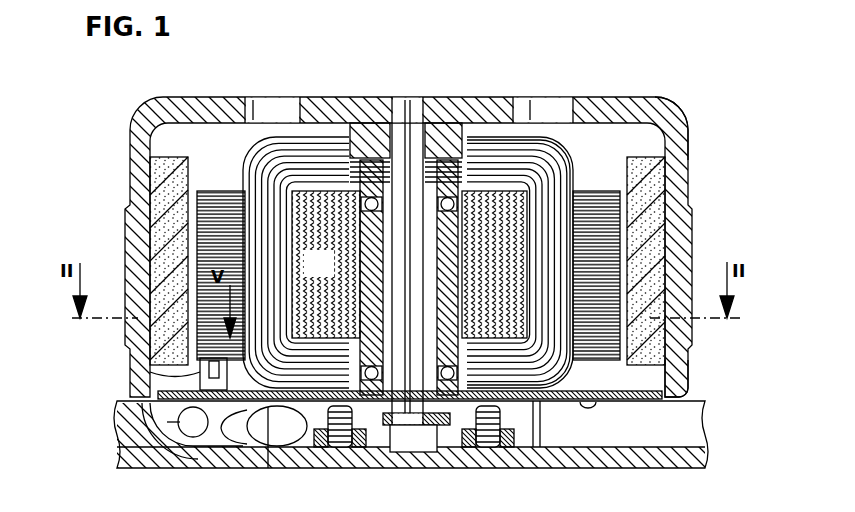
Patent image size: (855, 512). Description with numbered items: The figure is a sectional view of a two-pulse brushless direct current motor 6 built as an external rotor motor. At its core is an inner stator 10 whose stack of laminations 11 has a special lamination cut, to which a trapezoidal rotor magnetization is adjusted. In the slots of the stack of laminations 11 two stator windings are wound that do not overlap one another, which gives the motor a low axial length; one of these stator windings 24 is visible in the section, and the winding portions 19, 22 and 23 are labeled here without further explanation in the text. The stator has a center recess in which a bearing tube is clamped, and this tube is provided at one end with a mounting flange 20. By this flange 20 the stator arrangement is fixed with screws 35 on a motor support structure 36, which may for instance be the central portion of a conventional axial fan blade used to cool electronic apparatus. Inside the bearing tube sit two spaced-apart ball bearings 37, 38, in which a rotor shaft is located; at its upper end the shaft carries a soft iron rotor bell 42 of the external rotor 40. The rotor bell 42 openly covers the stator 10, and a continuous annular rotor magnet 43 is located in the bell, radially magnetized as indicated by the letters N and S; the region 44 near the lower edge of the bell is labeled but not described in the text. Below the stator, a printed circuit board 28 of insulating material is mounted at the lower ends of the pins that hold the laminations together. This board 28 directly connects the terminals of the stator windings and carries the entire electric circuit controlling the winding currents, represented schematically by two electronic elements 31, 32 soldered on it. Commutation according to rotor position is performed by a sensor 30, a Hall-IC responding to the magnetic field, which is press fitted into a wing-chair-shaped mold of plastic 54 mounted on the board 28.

The two-pulse brushless direct current motor 6 is at (247, 97).
The inner stator 10 is at (580, 184).
The stack of laminations 11 is at (332, 273).
The bearing tube 19 is at (345, 193).
The mounting flange 20 is at (327, 466).
The winding end 22 is at (513, 190).
The permanent magnet 23 is at (190, 222).
The stator winding 24 is at (492, 160).
The printed circuit board 28 is at (547, 393).
The sensor 30 is at (138, 376).
The electronic element 31 is at (196, 440).
The electronic element 32 is at (270, 468).
The screws 35 is at (493, 460).
The motor support structure 36 is at (188, 462).
The ball bearing 37 is at (447, 185).
The ball bearing 38 is at (445, 440).
The external rotor 40 is at (693, 168).
The soft iron rotor bell 42 is at (675, 138).
The annular rotor magnet 43 is at (650, 196).
The housing bottom flange 44 is at (672, 384).
The mold of plastic 54 is at (226, 378).